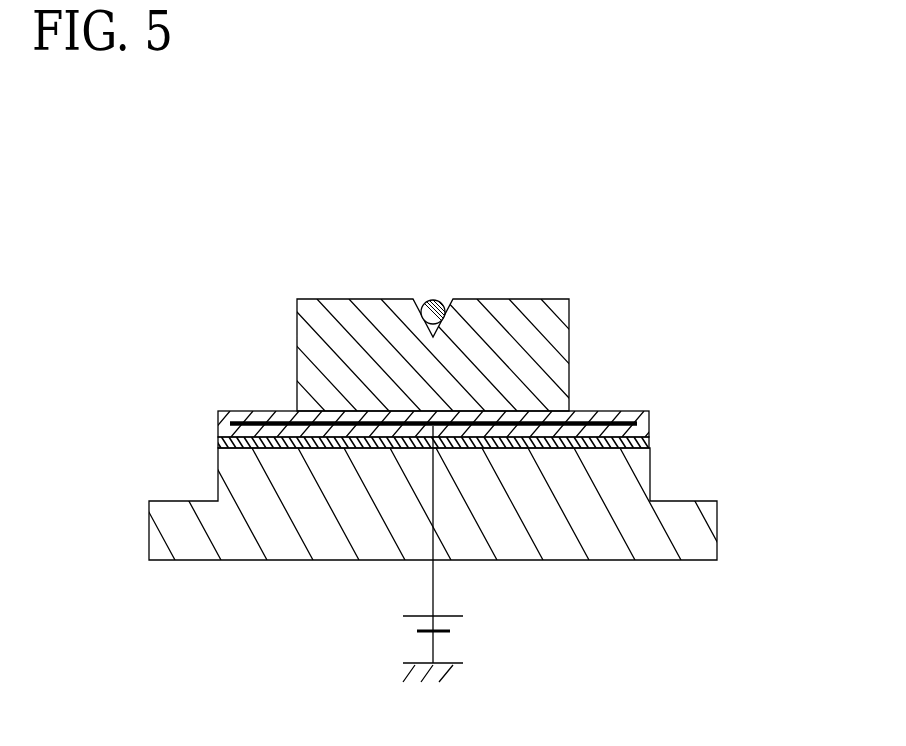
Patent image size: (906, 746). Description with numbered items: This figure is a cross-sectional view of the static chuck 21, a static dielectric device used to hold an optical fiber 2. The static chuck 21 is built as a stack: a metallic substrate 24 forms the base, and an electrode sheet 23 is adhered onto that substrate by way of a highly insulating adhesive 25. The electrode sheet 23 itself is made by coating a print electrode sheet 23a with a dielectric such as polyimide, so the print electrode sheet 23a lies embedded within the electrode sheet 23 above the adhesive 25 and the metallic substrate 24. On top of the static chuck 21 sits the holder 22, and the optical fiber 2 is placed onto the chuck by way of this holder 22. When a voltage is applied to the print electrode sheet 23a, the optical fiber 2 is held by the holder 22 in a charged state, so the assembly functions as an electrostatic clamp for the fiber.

The optical fiber 2 is at (429, 299).
The static chuck 21 is at (161, 394).
The holder 22 is at (558, 353).
The electrode sheet 23 is at (636, 405).
The print electrode sheet 23a is at (608, 427).
The metallic substrate 24 is at (700, 537).
The highly insulating adhesive 25 is at (628, 440).